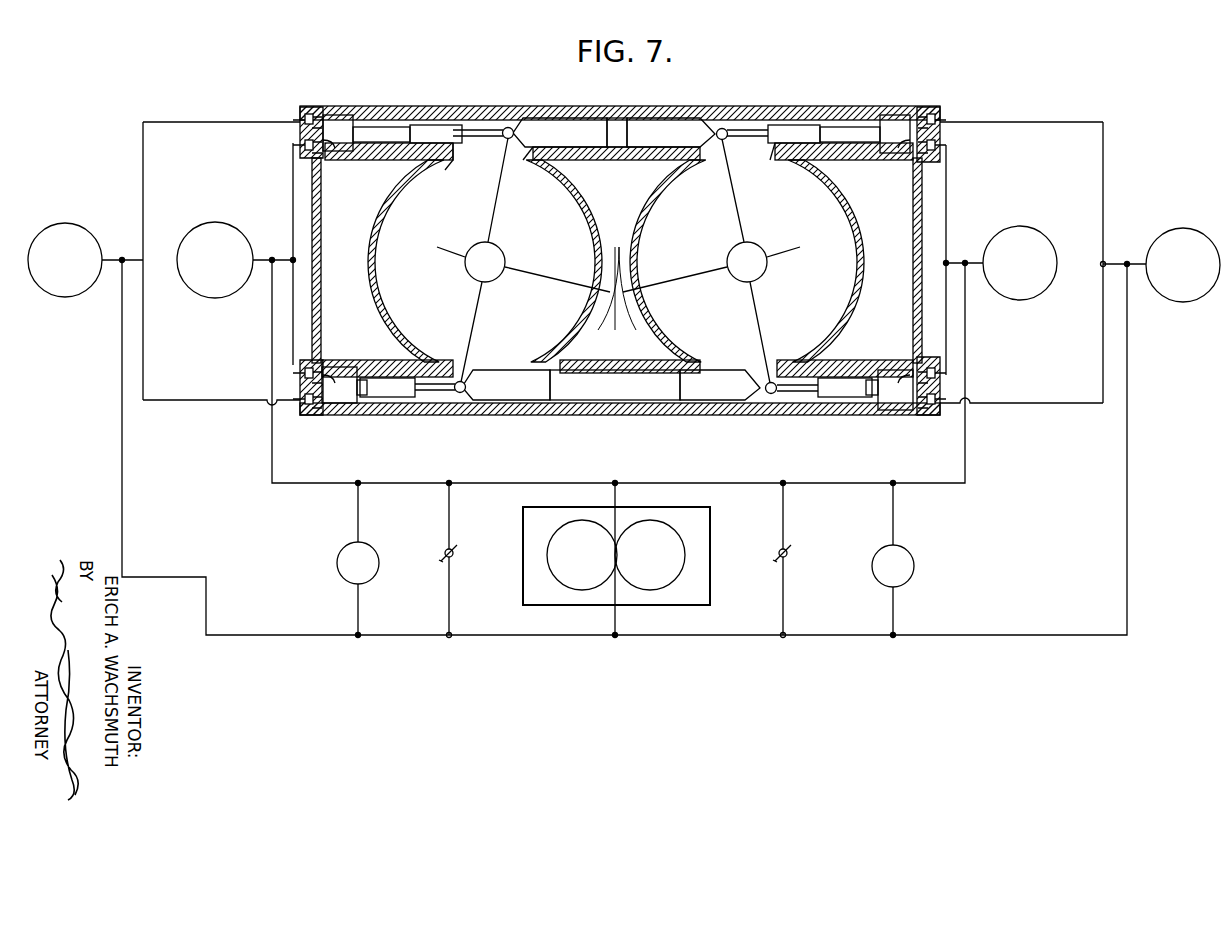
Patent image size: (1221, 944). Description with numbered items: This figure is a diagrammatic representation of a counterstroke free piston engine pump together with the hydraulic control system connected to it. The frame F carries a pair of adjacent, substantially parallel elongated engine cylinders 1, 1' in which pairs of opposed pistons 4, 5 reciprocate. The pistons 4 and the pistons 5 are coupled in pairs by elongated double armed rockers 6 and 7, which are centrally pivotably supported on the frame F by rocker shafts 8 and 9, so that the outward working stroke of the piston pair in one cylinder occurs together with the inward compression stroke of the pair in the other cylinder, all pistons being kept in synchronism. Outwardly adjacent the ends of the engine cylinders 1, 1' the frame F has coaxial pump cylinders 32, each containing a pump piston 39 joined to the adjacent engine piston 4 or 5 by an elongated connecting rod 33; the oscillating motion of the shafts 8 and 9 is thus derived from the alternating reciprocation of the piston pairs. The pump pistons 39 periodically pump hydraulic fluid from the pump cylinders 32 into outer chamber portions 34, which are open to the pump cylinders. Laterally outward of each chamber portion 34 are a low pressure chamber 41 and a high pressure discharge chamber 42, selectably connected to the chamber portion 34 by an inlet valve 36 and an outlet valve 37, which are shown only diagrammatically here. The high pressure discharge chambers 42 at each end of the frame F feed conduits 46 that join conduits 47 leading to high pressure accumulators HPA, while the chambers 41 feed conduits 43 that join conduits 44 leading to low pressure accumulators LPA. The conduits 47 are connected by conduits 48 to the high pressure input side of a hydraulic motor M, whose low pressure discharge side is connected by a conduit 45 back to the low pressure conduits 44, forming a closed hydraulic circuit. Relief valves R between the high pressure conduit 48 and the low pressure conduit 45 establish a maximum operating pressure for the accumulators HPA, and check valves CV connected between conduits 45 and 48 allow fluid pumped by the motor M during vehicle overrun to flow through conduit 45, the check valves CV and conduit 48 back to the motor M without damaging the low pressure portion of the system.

The engine cylinder 1 is at (619, 112).
The engine cylinder 1' is at (615, 410).
The piston 4 is at (565, 126).
The piston 5 is at (668, 126).
The double armed rocker 6 is at (500, 192).
The double armed rocker 7 is at (732, 192).
The rocker shaft 8 is at (500, 254).
The rocker shaft 9 is at (730, 254).
The pump cylinder 32 is at (378, 165).
The connecting rod 33 is at (492, 126).
The outer chamber portion 34 is at (361, 122).
The inlet valve 36 is at (334, 153).
The outlet valve 37 is at (318, 122).
The pump piston 39 is at (442, 126).
The low pressure chamber 41 is at (302, 145).
The high pressure discharge chamber 42 is at (300, 122).
The conduit 43 is at (295, 191).
The conduit 44 is at (272, 258).
The conduit 45 is at (271, 339).
The conduit 46 is at (187, 117).
The conduit 47 is at (122, 258).
The conduit 48 is at (124, 549).
The frame F is at (586, 418).
The hydraulic motor M is at (668, 573).
The relief valve R is at (380, 565).
The check valve CV is at (449, 550).
The high pressure accumulator HPA is at (624, 262).
The low pressure accumulator LPA is at (617, 261).